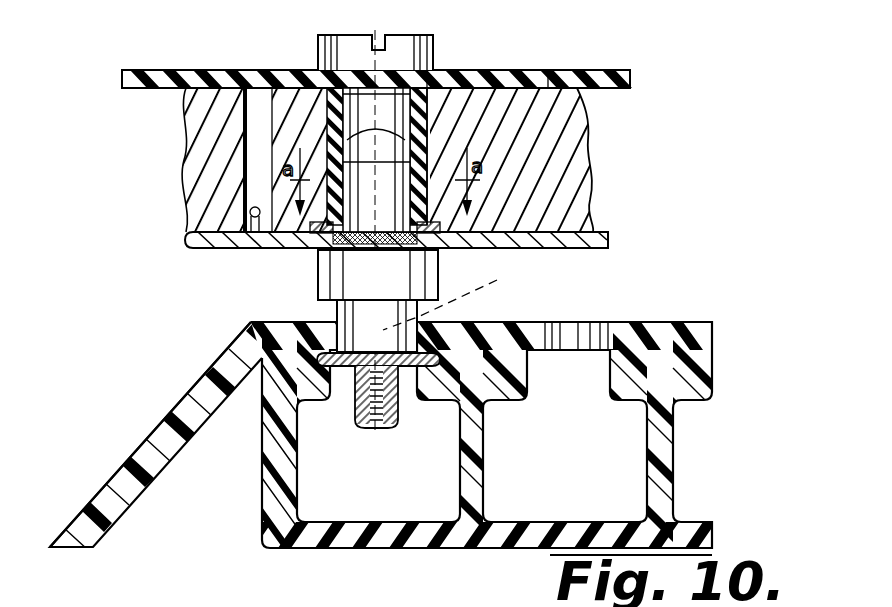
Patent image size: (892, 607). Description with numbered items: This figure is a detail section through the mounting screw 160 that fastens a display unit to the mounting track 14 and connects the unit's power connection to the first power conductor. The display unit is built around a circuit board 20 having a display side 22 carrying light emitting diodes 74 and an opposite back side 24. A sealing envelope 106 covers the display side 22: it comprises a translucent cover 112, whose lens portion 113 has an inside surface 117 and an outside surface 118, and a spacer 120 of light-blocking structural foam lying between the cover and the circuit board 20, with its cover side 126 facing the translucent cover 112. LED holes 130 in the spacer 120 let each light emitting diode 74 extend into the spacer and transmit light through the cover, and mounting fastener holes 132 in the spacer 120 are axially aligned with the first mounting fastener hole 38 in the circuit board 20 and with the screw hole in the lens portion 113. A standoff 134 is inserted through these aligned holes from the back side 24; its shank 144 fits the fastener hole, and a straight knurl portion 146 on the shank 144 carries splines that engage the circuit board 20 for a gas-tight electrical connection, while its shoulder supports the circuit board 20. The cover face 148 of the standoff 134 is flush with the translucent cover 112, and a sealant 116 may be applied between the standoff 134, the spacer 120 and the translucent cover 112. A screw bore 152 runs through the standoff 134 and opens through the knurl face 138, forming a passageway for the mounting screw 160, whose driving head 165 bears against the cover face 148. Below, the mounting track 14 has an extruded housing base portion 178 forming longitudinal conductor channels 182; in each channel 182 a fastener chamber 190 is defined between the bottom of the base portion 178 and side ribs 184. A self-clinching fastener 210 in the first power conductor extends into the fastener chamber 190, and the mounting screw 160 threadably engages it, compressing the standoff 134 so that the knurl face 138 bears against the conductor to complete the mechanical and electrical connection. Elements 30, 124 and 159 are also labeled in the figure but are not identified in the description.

The mounting track 14 is at (95, 483).
The circuit board 20 is at (612, 238).
The display side 22 is at (597, 232).
The back side 24 is at (502, 258).
The plate left portion 30 is at (258, 248).
The first mounting fastener hole 38 is at (343, 255).
The light emitting diodes 74 is at (250, 210).
The sealing envelope 106 is at (592, 247).
The translucent cover 112 is at (630, 79).
The lens portion 113 is at (631, 85).
The sealant 116 is at (338, 62).
The inside surface 117 is at (612, 92).
The outside surface 118 is at (603, 72).
The spacer 120 is at (572, 155).
The block bottom 124 is at (565, 222).
The cover side 126 is at (548, 90).
The LED holes 130 is at (256, 95).
The mounting fastener holes 132 is at (345, 135).
The standoff 134 is at (332, 132).
The knurl face 138 is at (215, 368).
The shank 144 is at (290, 193).
The straight knurl portion 146 is at (272, 250).
The cover face 148 is at (422, 90).
The screw bore 152 is at (382, 48).
The bore 159 is at (486, 277).
The mounting screw 160 is at (343, 63).
The driving head 165 is at (425, 90).
The housing base portion 178 is at (262, 530).
The longitudinal conductor channels 182 is at (618, 438).
The side ribs 184 is at (518, 392).
The fastener chamber 190 is at (690, 365).
The self-clinching fastener 210 is at (262, 447).